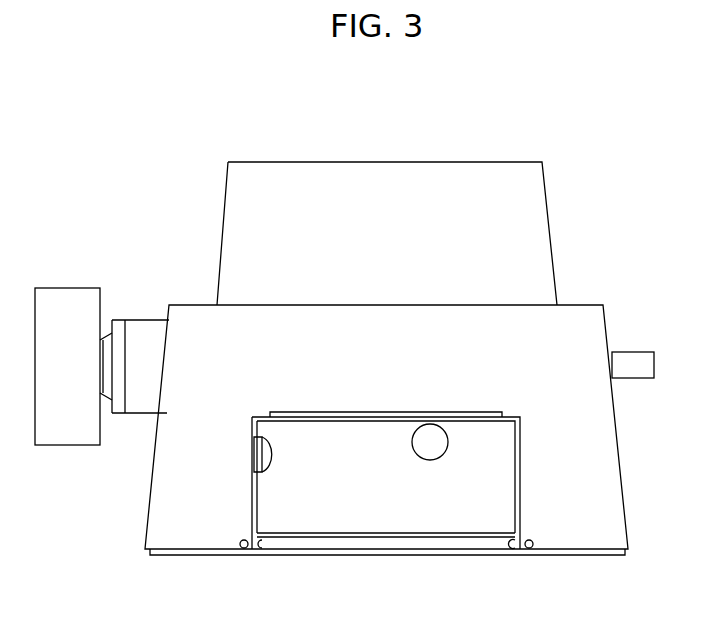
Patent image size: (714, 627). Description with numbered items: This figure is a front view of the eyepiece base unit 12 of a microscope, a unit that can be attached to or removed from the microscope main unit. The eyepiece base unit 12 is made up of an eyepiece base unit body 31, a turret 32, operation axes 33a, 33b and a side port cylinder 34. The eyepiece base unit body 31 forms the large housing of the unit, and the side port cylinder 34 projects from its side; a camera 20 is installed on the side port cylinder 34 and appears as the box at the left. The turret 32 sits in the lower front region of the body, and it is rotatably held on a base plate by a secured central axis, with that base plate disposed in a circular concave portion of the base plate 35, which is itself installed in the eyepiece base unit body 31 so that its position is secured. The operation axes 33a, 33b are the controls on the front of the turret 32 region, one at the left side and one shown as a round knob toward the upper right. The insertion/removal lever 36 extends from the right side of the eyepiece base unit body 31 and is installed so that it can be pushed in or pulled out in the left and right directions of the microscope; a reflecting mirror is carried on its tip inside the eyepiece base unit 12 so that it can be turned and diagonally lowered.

The eyepiece base unit 12 is at (598, 148).
The camera 20 is at (65, 445).
The eyepiece base unit body 31 is at (627, 512).
The turret 32 is at (475, 507).
The operation axis 33a is at (270, 455).
The operation axis 33b is at (448, 437).
The side port cylinder 34 is at (145, 333).
The base plate 35 is at (387, 543).
The insertion/removal lever 36 is at (654, 365).